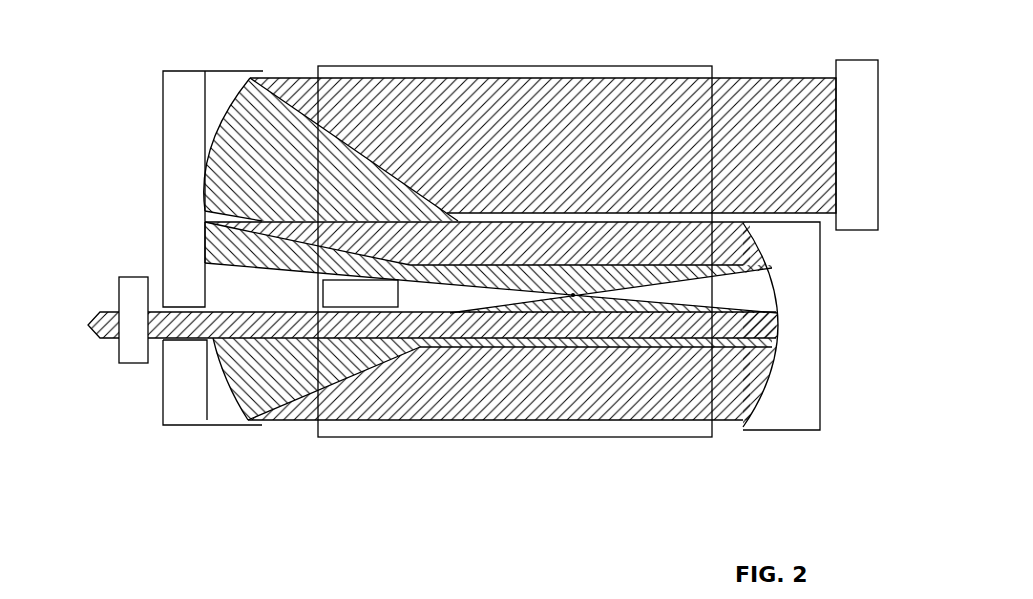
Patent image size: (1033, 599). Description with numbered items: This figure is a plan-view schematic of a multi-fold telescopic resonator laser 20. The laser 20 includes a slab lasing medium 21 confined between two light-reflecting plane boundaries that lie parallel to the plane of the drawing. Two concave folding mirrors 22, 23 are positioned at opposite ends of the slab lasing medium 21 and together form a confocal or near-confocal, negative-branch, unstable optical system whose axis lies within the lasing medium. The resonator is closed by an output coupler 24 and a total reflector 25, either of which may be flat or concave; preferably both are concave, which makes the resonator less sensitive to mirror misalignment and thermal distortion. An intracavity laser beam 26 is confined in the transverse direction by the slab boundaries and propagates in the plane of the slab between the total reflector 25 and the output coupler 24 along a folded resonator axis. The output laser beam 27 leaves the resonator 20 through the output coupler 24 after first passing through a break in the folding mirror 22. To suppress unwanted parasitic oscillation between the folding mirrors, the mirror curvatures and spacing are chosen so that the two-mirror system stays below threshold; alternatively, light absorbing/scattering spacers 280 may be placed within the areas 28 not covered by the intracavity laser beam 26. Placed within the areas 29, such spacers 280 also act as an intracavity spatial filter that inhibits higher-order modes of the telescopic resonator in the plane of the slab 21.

The laser 20 is at (178, 48).
The slab lasing medium 21 is at (615, 72).
The concave folding mirror 22 is at (187, 135).
The concave folding mirror 23 is at (795, 362).
The output coupler 24 is at (135, 363).
The total reflector 25 is at (845, 210).
The intracavity laser beam 26 is at (470, 108).
The output laser beam 27 is at (97, 320).
The areas 28 is at (467, 293).
The light absorbing/scattering spacer 280 is at (370, 287).
The areas 29 is at (550, 278).